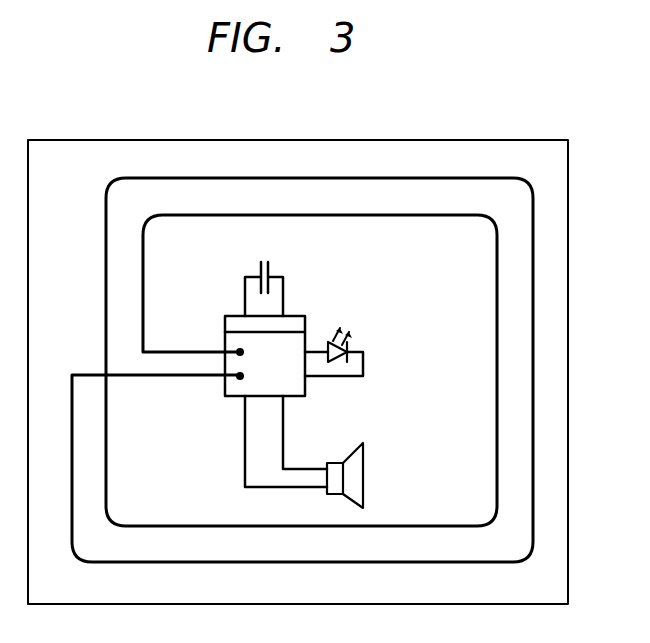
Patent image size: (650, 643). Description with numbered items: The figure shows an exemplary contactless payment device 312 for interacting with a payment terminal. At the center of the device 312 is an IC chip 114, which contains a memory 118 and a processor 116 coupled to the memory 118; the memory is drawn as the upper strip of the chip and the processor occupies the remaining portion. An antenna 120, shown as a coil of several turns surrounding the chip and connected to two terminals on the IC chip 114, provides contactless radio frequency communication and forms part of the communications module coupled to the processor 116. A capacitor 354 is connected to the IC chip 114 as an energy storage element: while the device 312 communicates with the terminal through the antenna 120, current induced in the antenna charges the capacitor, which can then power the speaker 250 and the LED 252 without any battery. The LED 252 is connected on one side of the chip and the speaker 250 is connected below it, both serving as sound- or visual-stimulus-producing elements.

The payment device 312 is at (289, 140).
The antenna 120 is at (106, 277).
The IC chip 114 is at (230, 397).
The memory 118 is at (238, 325).
The processor 116 is at (280, 375).
The capacitor 354 is at (270, 265).
The LED 252 is at (353, 346).
The speaker 250 is at (363, 478).